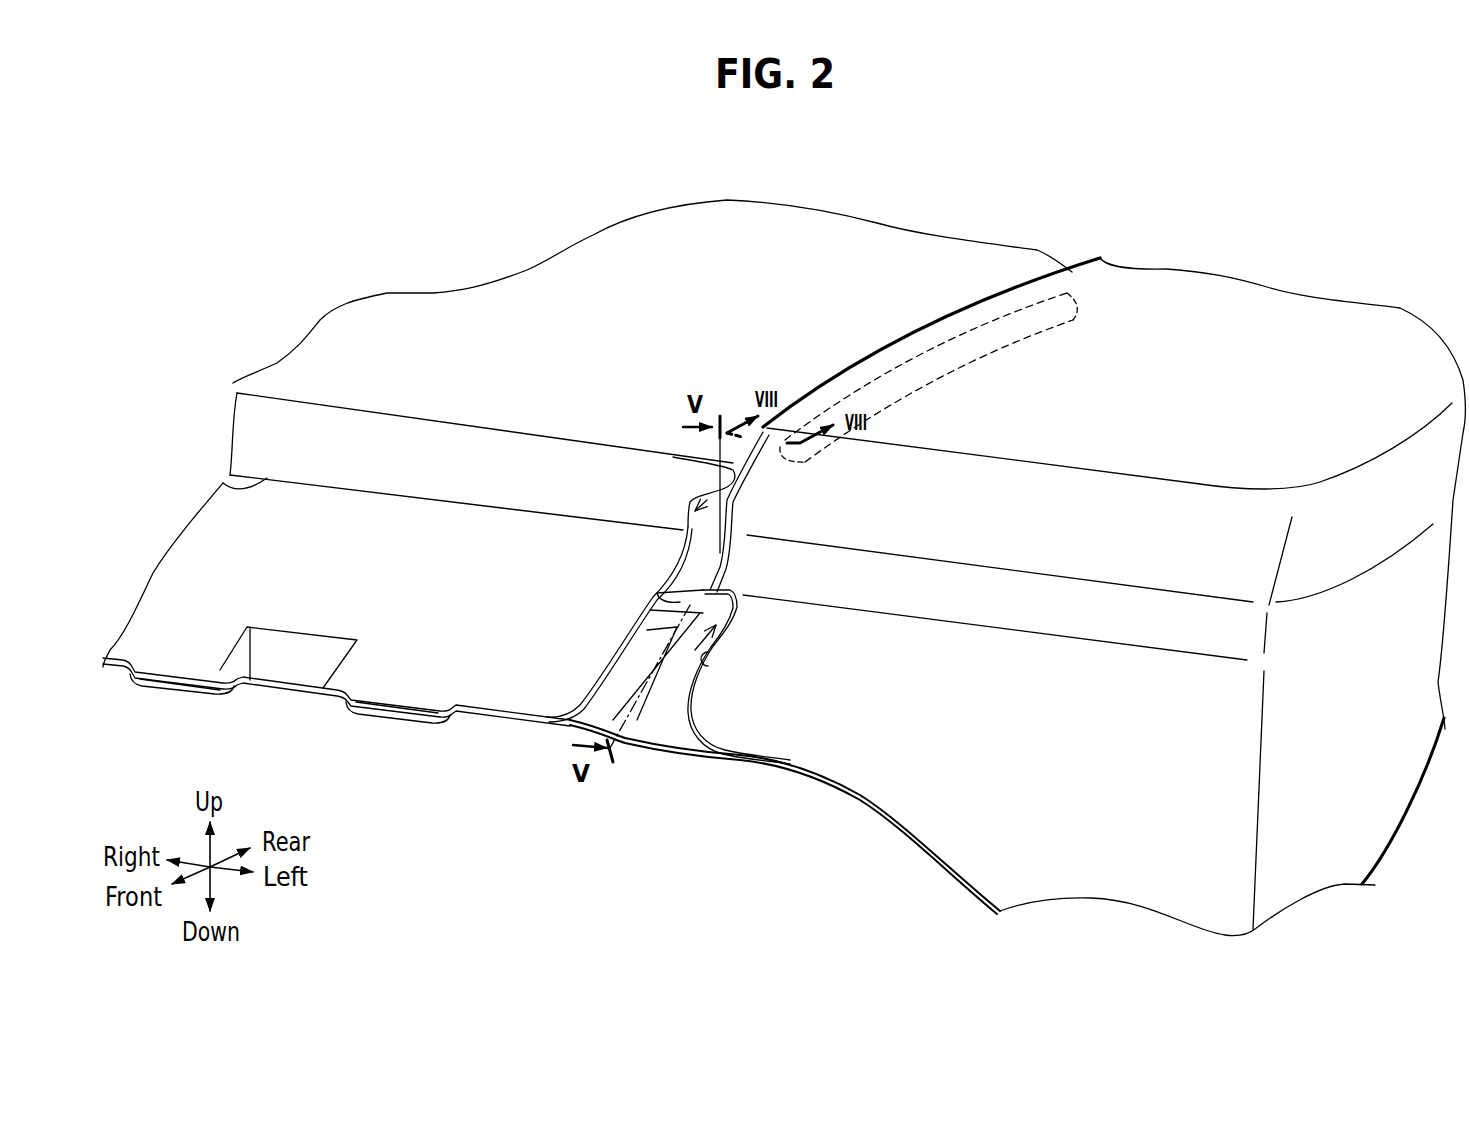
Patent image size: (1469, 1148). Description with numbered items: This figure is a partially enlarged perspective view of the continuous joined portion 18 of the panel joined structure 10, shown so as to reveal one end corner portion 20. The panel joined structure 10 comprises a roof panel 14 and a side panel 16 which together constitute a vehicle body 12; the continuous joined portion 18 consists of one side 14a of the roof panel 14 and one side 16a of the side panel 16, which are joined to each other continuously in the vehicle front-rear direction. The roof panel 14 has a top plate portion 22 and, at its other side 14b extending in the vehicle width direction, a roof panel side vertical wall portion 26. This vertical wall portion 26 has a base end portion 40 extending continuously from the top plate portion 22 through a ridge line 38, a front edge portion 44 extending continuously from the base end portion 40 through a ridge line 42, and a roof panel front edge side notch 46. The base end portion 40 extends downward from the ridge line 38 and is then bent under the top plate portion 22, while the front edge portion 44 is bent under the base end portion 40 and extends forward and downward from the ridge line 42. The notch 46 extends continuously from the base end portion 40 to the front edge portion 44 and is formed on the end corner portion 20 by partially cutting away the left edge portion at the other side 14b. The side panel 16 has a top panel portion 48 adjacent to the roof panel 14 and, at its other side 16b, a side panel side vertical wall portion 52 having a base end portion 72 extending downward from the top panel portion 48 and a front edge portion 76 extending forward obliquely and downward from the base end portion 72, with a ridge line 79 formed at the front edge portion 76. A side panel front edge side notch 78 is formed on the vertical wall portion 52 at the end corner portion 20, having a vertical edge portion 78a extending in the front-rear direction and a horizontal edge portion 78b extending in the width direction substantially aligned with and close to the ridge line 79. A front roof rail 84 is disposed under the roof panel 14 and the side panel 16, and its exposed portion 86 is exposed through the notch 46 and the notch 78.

The panel joined structure 10 is at (1005, 285).
The vehicle body 12 is at (387, 217).
The roof panel 14 is at (630, 275).
The one side of the roof panel 14a is at (915, 330).
The another side of the roof panel 14b is at (463, 555).
The side panel 16 is at (1185, 318).
The one side of the side panel 16a is at (947, 330).
The another side of the side panel 16b is at (928, 660).
The continuous joined portion 18 is at (815, 388).
The end corner portion 20 is at (742, 487).
The top plate portion 22 is at (533, 305).
The roof panel side vertical wall portion 26 is at (336, 649).
The ridge line 38 is at (337, 403).
The base end portion 40 is at (417, 462).
The ridge line 42 is at (223, 483).
The front edge portion 44 is at (523, 658).
The roof panel front edge side notch 46 is at (673, 457).
The top panel portion 48 is at (1303, 337).
The side panel side vertical wall portion 52 is at (938, 737).
The base end portion 72 is at (1064, 518).
The front edge portion 76 is at (842, 727).
The side panel front edge side notch 78 is at (672, 646).
The vertical edge portion 78a is at (710, 662).
The horizontal edge portion 78b is at (657, 593).
The ridge line 79 is at (1156, 649).
The front roof rail 84 is at (627, 743).
The exposed portion 86 is at (567, 713).